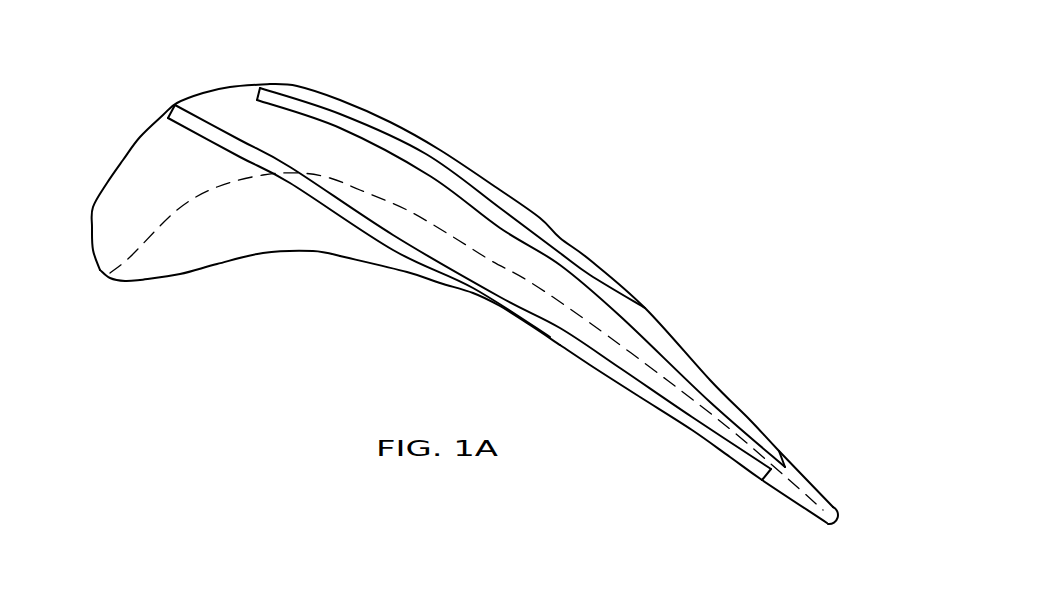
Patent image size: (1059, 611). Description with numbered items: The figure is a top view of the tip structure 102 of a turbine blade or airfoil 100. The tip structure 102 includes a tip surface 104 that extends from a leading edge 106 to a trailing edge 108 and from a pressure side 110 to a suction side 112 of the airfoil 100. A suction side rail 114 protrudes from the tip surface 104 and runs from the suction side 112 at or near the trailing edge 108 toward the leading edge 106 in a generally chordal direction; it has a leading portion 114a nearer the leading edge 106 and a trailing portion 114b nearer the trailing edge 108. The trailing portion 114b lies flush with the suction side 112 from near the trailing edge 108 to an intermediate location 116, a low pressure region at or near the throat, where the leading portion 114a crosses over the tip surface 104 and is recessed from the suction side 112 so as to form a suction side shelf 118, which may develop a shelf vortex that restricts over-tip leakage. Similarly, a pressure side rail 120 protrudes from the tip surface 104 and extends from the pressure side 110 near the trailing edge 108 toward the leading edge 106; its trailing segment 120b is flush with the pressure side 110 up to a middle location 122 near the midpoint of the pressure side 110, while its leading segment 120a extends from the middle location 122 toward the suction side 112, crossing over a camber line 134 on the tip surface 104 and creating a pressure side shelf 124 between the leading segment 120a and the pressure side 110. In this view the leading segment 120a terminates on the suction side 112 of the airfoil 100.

The airfoil 100 is at (461, 321).
The tip structure 102 is at (623, 133).
The tip surface 104 is at (110, 183).
The leading edge 106 is at (100, 286).
The trailing edge 108 is at (838, 534).
The pressure side 110 is at (440, 286).
The suction side 112 is at (521, 203).
The suction side rail 114 is at (526, 258).
The leading portion 114a is at (347, 112).
The trailing portion 114b is at (772, 400).
The intermediate location 116 is at (649, 304).
The suction side shelf 118 is at (468, 177).
The pressure side rail 120 is at (469, 293).
The leading segment 120a is at (292, 185).
The trailing segment 120b is at (698, 433).
The middle location 122 is at (620, 405).
The pressure side shelf 124 is at (297, 254).
The camber line 134 is at (180, 212).